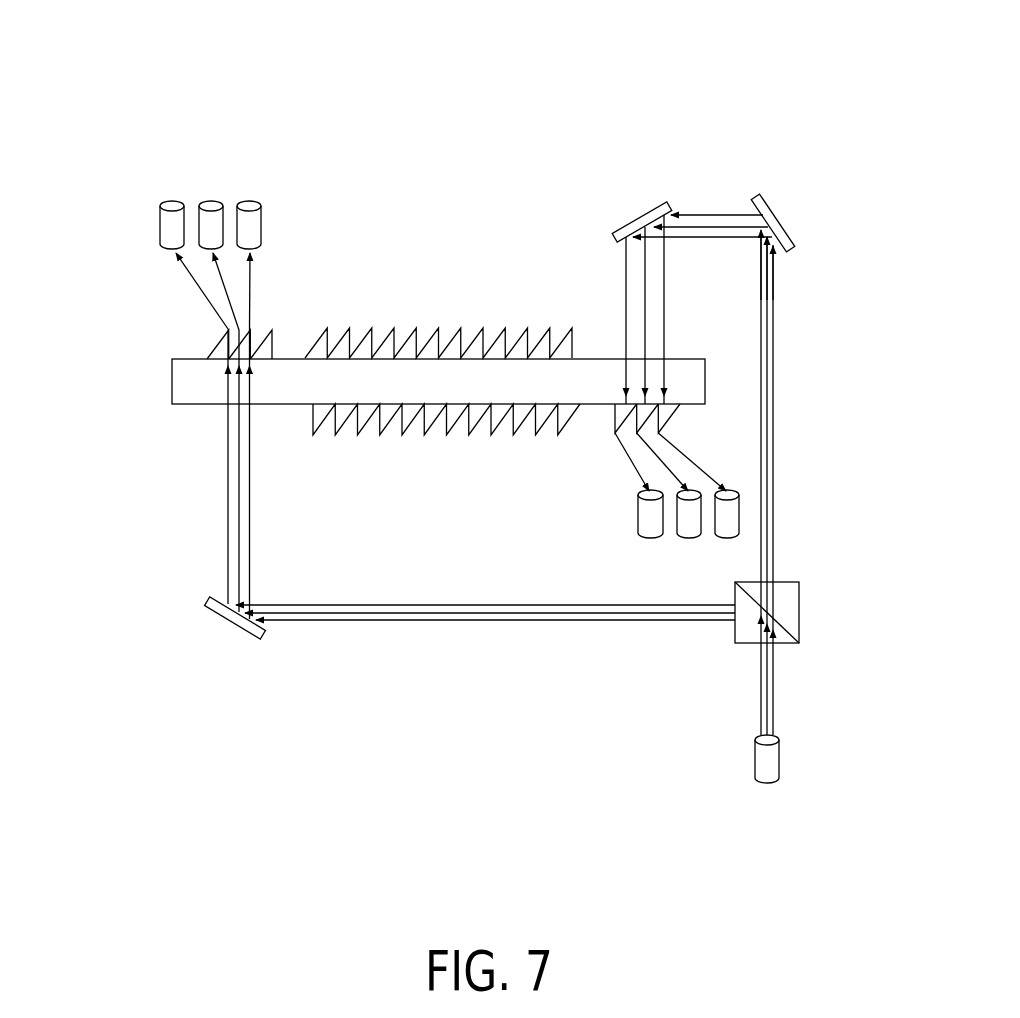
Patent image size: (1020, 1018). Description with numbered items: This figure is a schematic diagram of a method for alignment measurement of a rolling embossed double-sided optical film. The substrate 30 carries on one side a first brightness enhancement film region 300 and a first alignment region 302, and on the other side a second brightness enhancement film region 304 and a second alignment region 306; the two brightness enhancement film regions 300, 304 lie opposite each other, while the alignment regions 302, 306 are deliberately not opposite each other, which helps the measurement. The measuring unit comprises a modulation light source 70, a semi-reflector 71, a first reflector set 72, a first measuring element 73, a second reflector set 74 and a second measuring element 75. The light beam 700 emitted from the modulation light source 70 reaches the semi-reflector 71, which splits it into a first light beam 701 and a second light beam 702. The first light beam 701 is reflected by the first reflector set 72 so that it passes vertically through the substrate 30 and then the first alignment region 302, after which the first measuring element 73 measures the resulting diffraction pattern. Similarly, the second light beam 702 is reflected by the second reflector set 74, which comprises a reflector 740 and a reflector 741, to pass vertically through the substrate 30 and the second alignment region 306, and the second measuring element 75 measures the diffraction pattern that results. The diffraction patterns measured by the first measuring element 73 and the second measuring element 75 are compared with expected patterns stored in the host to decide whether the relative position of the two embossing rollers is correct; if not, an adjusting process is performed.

The substrate 30 is at (172, 383).
The first brightness enhancement film region 300 is at (428, 330).
The first alignment region 302 is at (212, 345).
The second brightness enhancement film region 304 is at (430, 432).
The second alignment region 306 is at (670, 416).
The modulation light source 70 is at (780, 760).
The light beam 700 is at (773, 703).
The first light beam 701 is at (467, 622).
The second light beam 702 is at (773, 477).
The semi-reflector 71 is at (799, 610).
The first reflector set 72 is at (230, 625).
The first measuring element 73 is at (160, 223).
The second reflector set 74 is at (703, 203).
The reflector 740 is at (784, 200).
The reflector 741 is at (652, 202).
The second measuring element 75 is at (638, 516).